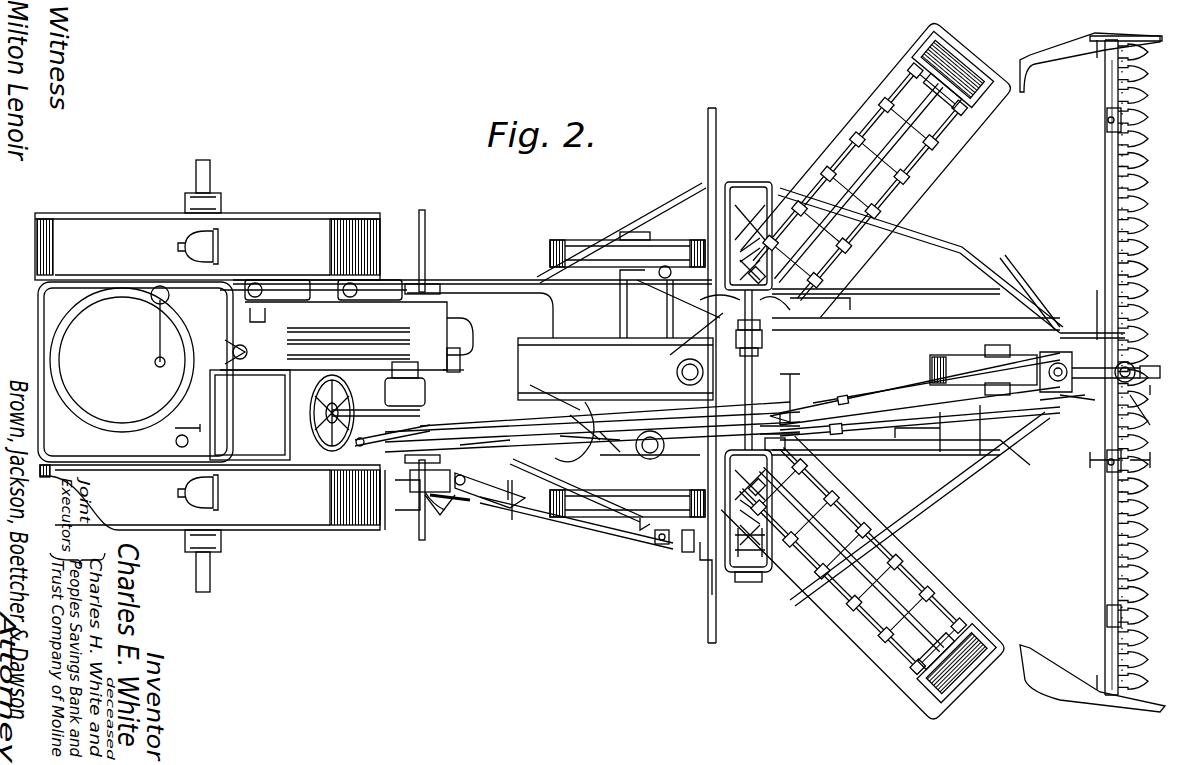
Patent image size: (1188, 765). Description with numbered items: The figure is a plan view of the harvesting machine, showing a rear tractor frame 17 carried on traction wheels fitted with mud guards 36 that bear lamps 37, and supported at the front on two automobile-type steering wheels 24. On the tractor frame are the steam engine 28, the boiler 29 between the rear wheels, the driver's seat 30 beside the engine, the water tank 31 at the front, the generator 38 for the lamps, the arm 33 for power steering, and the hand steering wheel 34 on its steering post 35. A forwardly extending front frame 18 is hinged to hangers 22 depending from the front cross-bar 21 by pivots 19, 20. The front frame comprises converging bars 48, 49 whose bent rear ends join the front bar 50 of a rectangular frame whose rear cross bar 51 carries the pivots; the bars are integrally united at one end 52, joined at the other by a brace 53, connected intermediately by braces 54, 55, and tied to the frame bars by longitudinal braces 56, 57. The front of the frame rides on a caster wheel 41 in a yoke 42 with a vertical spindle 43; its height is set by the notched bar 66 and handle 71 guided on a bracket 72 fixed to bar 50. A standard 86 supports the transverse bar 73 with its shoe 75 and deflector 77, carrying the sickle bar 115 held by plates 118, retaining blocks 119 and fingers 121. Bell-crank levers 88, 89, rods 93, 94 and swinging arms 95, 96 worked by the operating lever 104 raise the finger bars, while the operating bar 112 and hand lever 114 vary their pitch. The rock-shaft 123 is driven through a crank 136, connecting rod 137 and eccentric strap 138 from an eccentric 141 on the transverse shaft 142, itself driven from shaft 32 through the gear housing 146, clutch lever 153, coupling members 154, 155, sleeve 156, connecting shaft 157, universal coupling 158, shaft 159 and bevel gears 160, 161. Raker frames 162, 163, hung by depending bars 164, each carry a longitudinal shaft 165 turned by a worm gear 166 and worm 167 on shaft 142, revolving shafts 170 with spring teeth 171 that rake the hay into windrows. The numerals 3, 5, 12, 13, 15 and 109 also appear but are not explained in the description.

The frame bar 3 is at (970, 430).
The section line 5 is at (1118, 456).
The frame member 12 is at (859, 398).
The cutter bar connection 13 is at (1162, 392).
The frame member 15 is at (452, 522).
The tractor frame 17 is at (38, 332).
The front frame 18 is at (1012, 258).
The pivot 19 is at (707, 198).
The pivot 20 is at (660, 525).
The front cross-bar 21 is at (708, 126).
The hangers 22 is at (712, 232).
The steering wheels 24 is at (560, 240).
The steam engine 28 is at (388, 370).
The boiler 29 is at (100, 422).
The driver's seat 30 is at (218, 448).
The water tank 31 is at (590, 333).
The transverse shaft 32 is at (434, 378).
The arm or lever 33 is at (360, 460).
The hand steering wheel 34 is at (320, 389).
The steering post 35 is at (488, 416).
The mud guards 36 is at (40, 283).
The lamps 37 is at (200, 262).
The generator 38 is at (466, 361).
The caster wheel 41 is at (935, 366).
The yoke 42 is at (996, 345).
The vertical spindle 43 is at (1058, 360).
The front frame bar 48 is at (815, 140).
The front frame bar 49 is at (965, 478).
The front bar 50 is at (830, 312).
The cross bar 51 is at (681, 349).
The united end 52 is at (755, 585).
The brace 53 is at (768, 182).
The brace 54 is at (712, 446).
The brace 55 is at (709, 297).
The longitudinal brace 56 is at (932, 289).
The longitudinal brace 57 is at (948, 452).
The notched bar 66 is at (895, 398).
The handle 71 is at (545, 400).
The bracket 72 is at (784, 422).
The transverse bar 73 is at (1105, 218).
The shoe 75 is at (1130, 36).
The deflector 77 is at (1030, 60).
The standard 86 is at (1095, 405).
The bell-crank lever 88 is at (1097, 290).
The bell-crank lever 89 is at (1075, 405).
The rod 93 is at (862, 402).
The rod 94 is at (941, 432).
The swinging arm 95 is at (790, 414).
The swinging arm 96 is at (785, 445).
The operating lever 104 is at (571, 442).
The bearing 109 is at (1150, 366).
The operating bar 112 is at (905, 425).
The hand lever 114 is at (485, 443).
The sickle bar 115 is at (1125, 190).
The plates 118 is at (1107, 112).
The retaining blocks 119 is at (1108, 122).
The fingers 121 is at (1145, 210).
The rock-shaft 123 is at (1152, 413).
The crank 136 is at (1130, 345).
The connecting rod 137 is at (925, 320).
The eccentric strap 138 is at (760, 324).
The eccentric 141 is at (762, 342).
The transverse shaft 142 is at (790, 304).
The housing 146 is at (441, 526).
The operating lever 153 is at (409, 529).
The universal coupling member 154 is at (470, 505).
The universal coupling member 155 is at (495, 492).
The sleeve 156 is at (508, 512).
The connecting shaft 157 is at (575, 518).
The universal coupling 158 is at (662, 550).
The shaft 159 is at (688, 555).
The bevel gear 160 is at (712, 580).
The bevel gear 161 is at (740, 560).
The raker frame 162 is at (970, 136).
The raker frame 163 is at (920, 560).
The depending bars 164 is at (848, 120).
The longitudinal shaft 165 is at (960, 50).
The worm gear 166 is at (790, 268).
The worm 167 is at (780, 255).
The shafts 170 is at (895, 75).
The spring teeth 171 is at (905, 55).